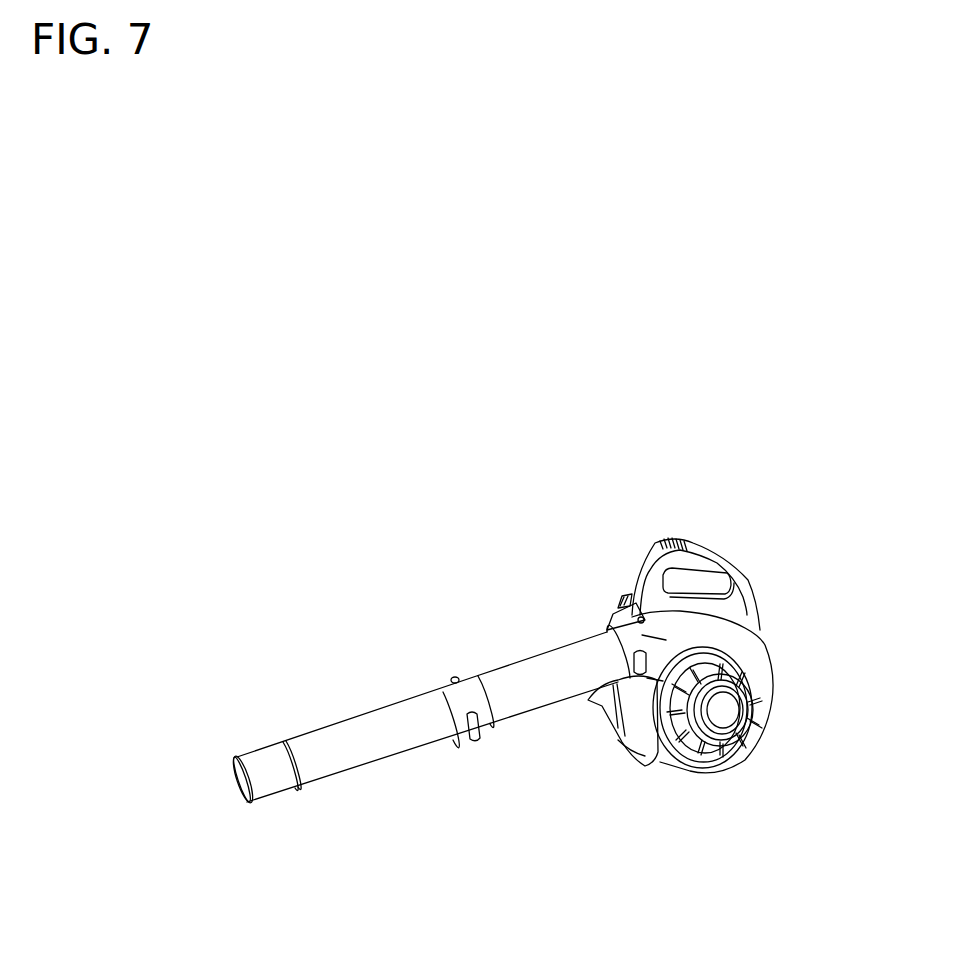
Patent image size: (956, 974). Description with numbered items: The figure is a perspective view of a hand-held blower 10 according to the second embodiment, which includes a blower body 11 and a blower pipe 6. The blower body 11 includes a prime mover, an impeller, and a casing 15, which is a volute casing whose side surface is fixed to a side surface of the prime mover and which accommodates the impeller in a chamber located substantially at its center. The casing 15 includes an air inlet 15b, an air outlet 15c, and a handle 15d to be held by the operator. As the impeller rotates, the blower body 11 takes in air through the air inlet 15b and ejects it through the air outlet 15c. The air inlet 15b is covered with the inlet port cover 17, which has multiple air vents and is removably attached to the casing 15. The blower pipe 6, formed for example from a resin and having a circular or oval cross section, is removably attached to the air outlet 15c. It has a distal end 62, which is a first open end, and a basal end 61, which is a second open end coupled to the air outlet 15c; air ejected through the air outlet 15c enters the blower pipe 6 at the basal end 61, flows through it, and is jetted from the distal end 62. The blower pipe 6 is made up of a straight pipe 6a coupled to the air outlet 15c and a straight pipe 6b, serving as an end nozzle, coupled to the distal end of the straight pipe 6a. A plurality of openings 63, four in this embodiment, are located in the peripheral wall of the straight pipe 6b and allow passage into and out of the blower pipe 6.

The blower 10 is at (762, 595).
The blower body 11 is at (774, 693).
The casing 15 is at (626, 742).
The air inlet 15b is at (713, 762).
The air outlet 15c is at (603, 708).
The handle 15d is at (710, 553).
The inlet port cover 17 is at (753, 723).
The blower pipe 6 is at (466, 674).
The straight pipe 6a is at (530, 663).
The straight pipe (end nozzle) 6b is at (341, 719).
The basal end 61 is at (615, 619).
The distal end 62 is at (235, 775).
The openings 63 is at (387, 706).